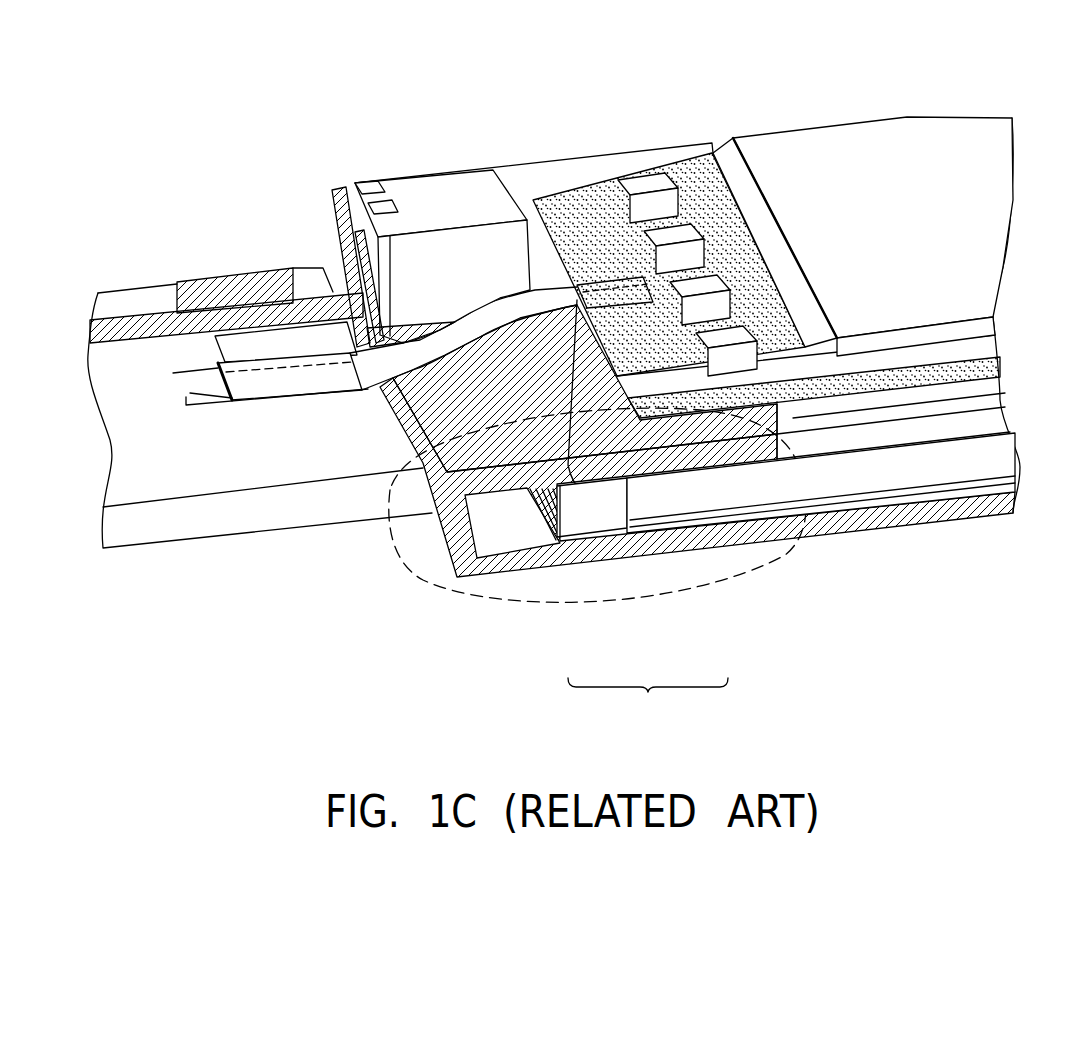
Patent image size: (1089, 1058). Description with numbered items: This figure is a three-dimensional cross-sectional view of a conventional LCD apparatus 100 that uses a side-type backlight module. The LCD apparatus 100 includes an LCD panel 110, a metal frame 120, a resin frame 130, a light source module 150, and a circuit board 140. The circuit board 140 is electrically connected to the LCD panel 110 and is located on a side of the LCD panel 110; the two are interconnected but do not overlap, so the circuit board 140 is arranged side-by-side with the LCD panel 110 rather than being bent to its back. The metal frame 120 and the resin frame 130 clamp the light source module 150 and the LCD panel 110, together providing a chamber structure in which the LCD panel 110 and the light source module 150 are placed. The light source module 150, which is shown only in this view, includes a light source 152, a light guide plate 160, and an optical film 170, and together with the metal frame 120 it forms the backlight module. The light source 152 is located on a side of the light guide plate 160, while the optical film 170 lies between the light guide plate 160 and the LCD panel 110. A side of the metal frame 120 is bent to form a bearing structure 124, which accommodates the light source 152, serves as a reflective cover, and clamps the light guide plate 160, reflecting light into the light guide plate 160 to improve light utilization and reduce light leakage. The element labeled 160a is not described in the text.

The LCD apparatus 100 is at (1059, 702).
The LCD panel 110 is at (890, 175).
The metal frame 120 is at (877, 430).
The bearing structure 124 is at (467, 593).
The resin frame 130 is at (436, 200).
The circuit board 140 is at (288, 505).
The light source module 150 is at (648, 702).
The light source 152 is at (590, 520).
The light guide plate 160 is at (747, 487).
The flexible circuit board 160a is at (578, 288).
The optical film 170 is at (800, 505).